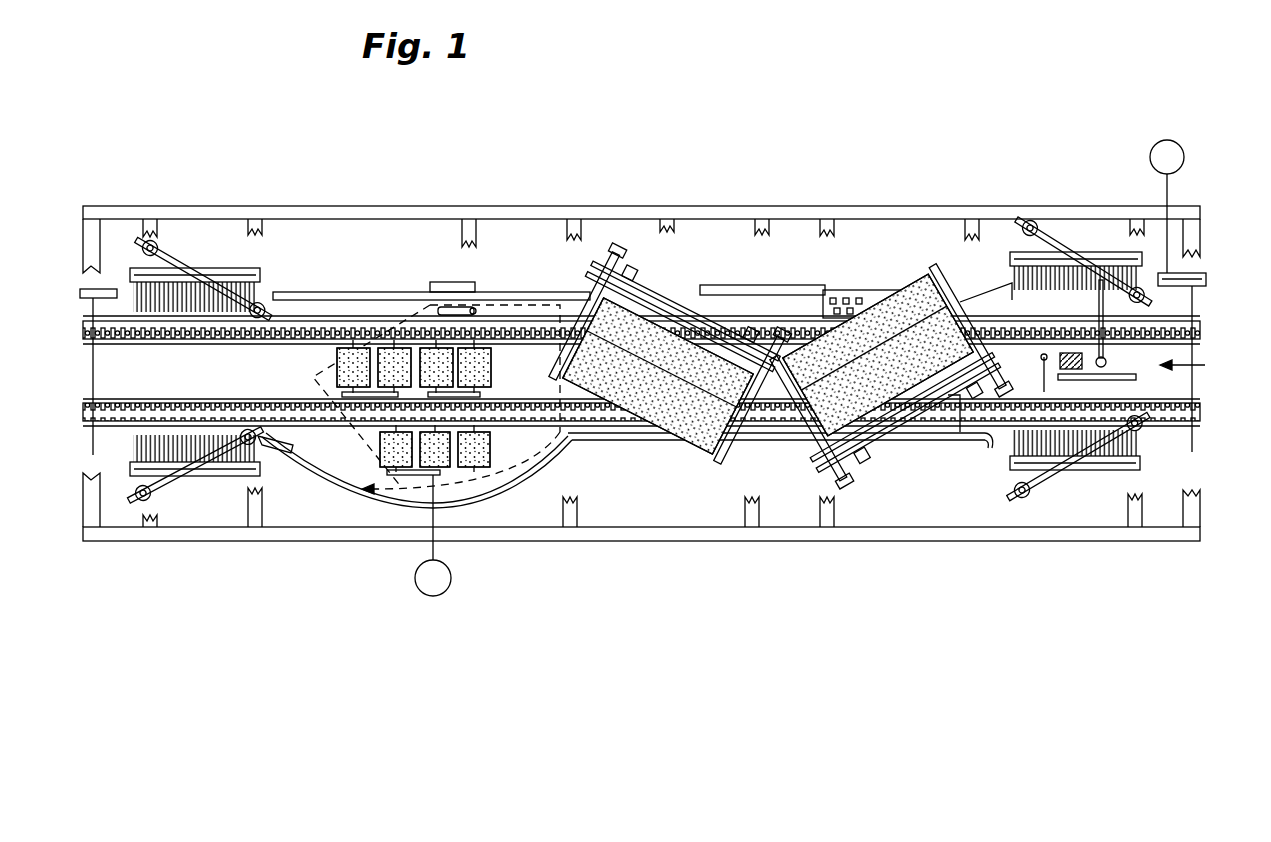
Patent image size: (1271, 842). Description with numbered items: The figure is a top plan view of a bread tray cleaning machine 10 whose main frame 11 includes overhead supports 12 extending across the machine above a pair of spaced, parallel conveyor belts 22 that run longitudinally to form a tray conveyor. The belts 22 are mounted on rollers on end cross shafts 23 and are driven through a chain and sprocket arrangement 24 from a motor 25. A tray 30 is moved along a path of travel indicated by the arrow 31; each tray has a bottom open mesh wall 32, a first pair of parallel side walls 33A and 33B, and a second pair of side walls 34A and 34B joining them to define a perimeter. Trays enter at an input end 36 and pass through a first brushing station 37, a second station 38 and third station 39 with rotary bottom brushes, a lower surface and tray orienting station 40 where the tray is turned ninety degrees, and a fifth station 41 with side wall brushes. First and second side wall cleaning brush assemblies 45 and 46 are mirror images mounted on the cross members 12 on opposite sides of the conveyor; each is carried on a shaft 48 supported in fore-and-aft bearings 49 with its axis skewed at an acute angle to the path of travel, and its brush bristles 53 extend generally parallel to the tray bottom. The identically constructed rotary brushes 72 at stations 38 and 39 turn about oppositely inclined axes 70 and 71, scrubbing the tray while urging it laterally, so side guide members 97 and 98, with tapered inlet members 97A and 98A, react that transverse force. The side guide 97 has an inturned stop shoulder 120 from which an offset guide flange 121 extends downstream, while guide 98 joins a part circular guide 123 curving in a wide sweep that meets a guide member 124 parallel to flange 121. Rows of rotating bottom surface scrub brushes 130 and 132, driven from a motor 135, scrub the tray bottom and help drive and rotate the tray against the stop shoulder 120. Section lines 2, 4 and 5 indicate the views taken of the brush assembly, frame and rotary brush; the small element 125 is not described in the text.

The bread tray cleaning machine 10 is at (893, 176).
The main frame 11 is at (710, 546).
The overhead supports 12 is at (578, 499).
The conveyor belts 22 is at (291, 407).
The end cross shafts 23 is at (98, 373).
The chain and sprocket arrangement 24 is at (1207, 275).
The motor 25 is at (1178, 145).
The tray 30 is at (815, 300).
The arrow 31 is at (1212, 366).
The bottom open mesh wall 32 is at (841, 298).
The side wall 33A is at (872, 300).
The side wall 33B is at (926, 434).
The side wall 34A is at (811, 291).
The side wall 34B is at (952, 425).
The input end 36 is at (1167, 468).
The first brushing station 37 is at (1073, 222).
The second station 38 is at (805, 439).
The third station 39 is at (641, 300).
The lower surface and tray orienting station 40 is at (458, 236).
The fifth station 41 is at (199, 245).
The first side wall cleaning brush assembly 45 is at (126, 270).
The second side wall cleaning brush assembly 46 is at (128, 463).
The shaft 48 is at (201, 279).
The bearings 49 is at (152, 241).
The bristles 53 is at (258, 303).
The axis 70 is at (1003, 287).
The axis 71 is at (571, 296).
The brush 72 is at (926, 280).
The side guide member 97 is at (752, 284).
The tapered inlet member 97A is at (996, 300).
The side guide member 98 is at (613, 441).
The tapered inlet member 98A is at (990, 449).
The stop shoulder 120 is at (437, 291).
The offset guide flange 121 is at (341, 294).
The part circular guide 123 is at (540, 456).
The guide member 124 is at (375, 470).
The cylinder 125 is at (472, 302).
The bottom surface scrub brushes 130 is at (493, 460).
The bottom surface scrub brushes 132 is at (380, 470).
The motor 135 is at (452, 578).
The section line 2 is at (1175, 302).
The section line 4 is at (1010, 142).
The section line 5 is at (535, 334).